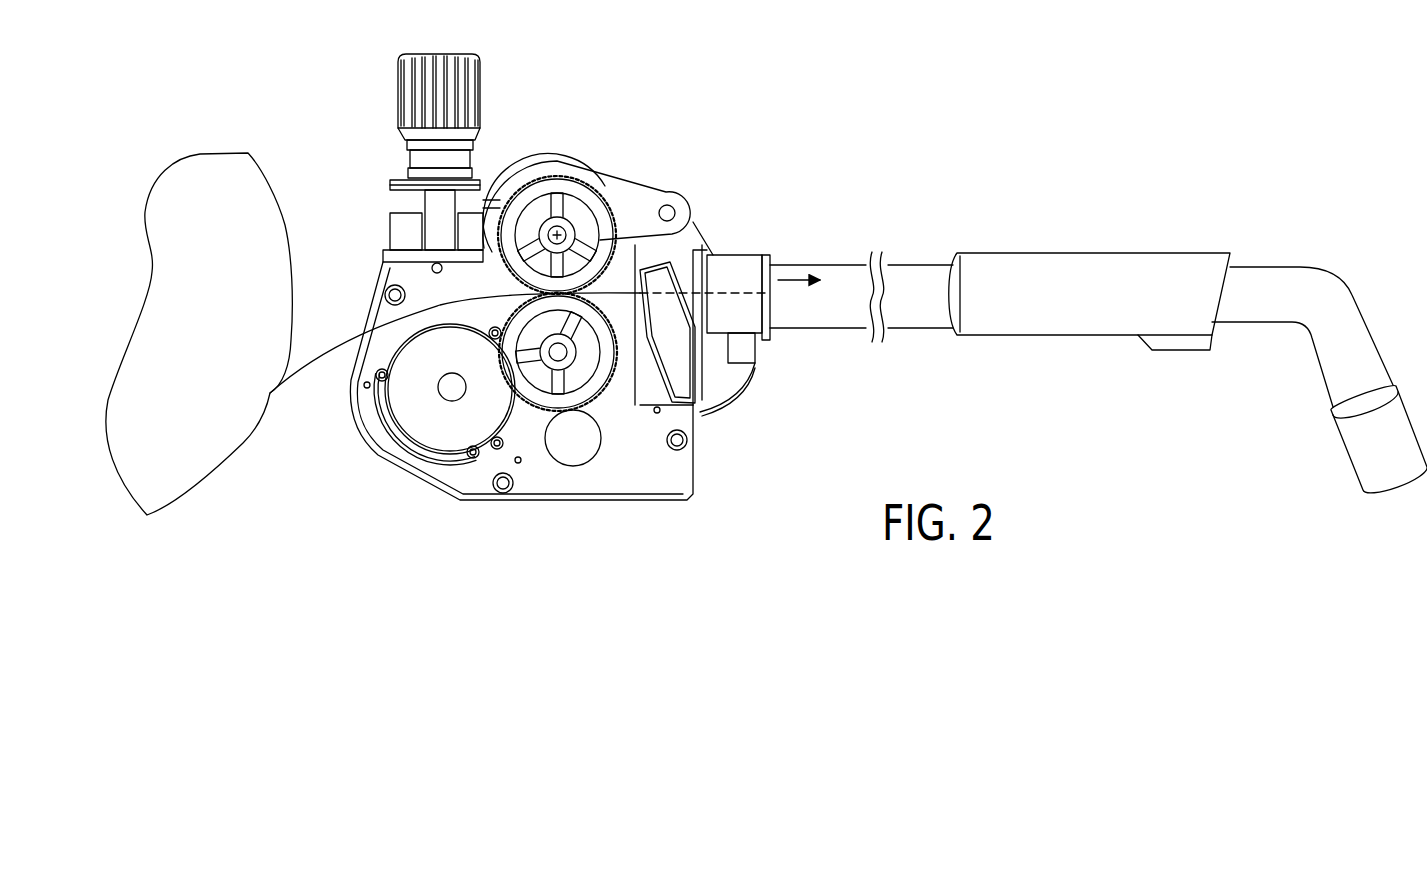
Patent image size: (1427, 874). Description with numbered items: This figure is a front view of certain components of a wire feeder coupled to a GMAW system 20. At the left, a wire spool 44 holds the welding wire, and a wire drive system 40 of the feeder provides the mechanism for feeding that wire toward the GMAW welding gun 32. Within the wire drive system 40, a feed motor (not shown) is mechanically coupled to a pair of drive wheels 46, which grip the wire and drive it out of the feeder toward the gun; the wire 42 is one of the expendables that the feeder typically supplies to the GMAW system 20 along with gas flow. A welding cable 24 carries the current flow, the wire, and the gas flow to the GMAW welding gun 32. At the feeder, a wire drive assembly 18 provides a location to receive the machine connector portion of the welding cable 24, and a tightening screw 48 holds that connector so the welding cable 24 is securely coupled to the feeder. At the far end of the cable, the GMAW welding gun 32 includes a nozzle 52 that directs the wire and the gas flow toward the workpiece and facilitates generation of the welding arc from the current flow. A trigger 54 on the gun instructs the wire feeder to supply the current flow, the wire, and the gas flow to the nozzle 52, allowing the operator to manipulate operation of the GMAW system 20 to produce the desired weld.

The wire drive assembly 18 is at (770, 338).
The GMAW system 20 is at (1074, 170).
The welding cable 24 is at (928, 262).
The GMAW welding gun 32 is at (1230, 265).
The wire drive system 40 is at (708, 109).
The wire 42 is at (347, 338).
The wire spool 44 is at (222, 330).
The drive wheels 46 is at (600, 347).
The tightening screw 48 is at (678, 368).
The nozzle 52 is at (1398, 490).
The trigger 54 is at (1180, 352).